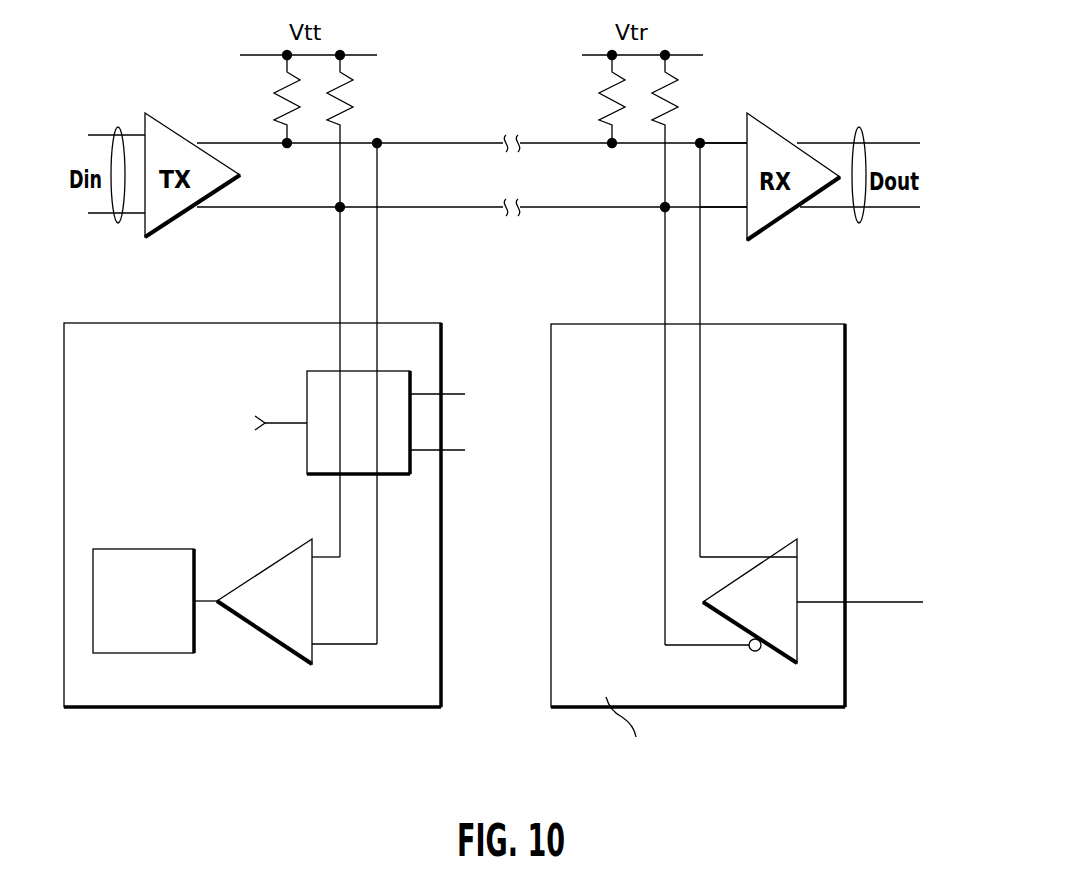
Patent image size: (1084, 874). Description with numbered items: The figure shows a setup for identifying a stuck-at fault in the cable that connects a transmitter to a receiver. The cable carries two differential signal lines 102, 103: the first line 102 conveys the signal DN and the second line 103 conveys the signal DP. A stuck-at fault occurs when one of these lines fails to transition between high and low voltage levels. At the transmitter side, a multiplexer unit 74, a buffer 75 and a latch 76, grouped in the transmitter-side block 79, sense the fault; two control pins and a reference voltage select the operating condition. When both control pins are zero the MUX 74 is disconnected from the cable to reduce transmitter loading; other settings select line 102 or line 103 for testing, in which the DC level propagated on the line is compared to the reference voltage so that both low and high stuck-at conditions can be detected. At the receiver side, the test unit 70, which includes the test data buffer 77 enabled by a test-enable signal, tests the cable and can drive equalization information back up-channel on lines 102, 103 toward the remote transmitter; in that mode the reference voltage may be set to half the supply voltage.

The differential signal line 102 is at (427, 143).
The differential signal line 103 is at (427, 207).
The test unit 70 is at (823, 692).
The multiplexer unit 74 is at (388, 466).
The buffer 75 is at (281, 565).
The latch 76 is at (160, 556).
The tri-state test data buffer 77 is at (783, 558).
The test comparison circuit block 79 is at (306, 692).